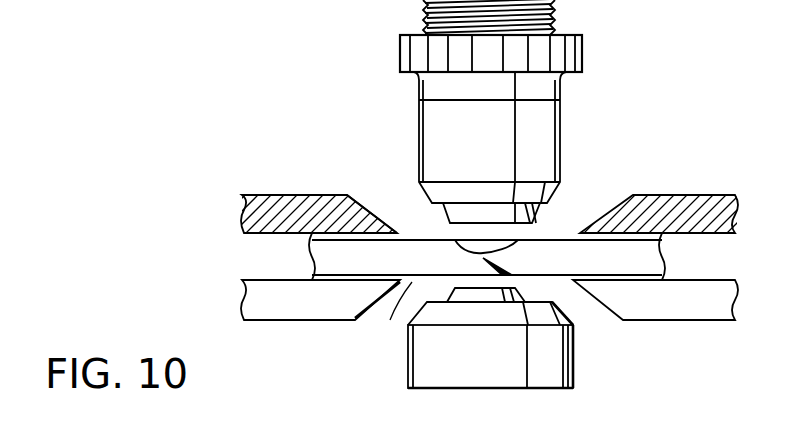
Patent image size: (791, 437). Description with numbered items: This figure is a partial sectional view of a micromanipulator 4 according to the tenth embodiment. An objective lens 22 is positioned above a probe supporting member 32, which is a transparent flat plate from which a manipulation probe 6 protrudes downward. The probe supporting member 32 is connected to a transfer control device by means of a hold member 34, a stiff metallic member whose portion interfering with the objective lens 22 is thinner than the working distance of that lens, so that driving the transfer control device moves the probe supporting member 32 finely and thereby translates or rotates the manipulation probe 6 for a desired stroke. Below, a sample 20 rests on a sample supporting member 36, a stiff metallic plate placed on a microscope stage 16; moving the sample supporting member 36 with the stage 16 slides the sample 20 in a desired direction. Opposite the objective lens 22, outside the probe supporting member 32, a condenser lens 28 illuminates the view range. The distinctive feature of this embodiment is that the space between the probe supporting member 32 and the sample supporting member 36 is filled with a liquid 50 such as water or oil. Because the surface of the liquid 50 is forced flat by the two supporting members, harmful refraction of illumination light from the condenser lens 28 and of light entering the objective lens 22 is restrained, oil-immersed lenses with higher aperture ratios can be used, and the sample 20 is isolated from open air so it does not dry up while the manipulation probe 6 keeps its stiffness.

The micromanipulator 4 is at (592, 189).
The manipulation probe 6 is at (485, 265).
The microscope stage 16 is at (708, 197).
The sample 20 is at (517, 245).
The objective lens 22 is at (418, 92).
The condenser lens 28 is at (573, 372).
The probe supporting member 32 is at (385, 320).
The hold member 34 is at (707, 323).
The sample supporting member 36 is at (413, 232).
The liquid 50 is at (313, 260).